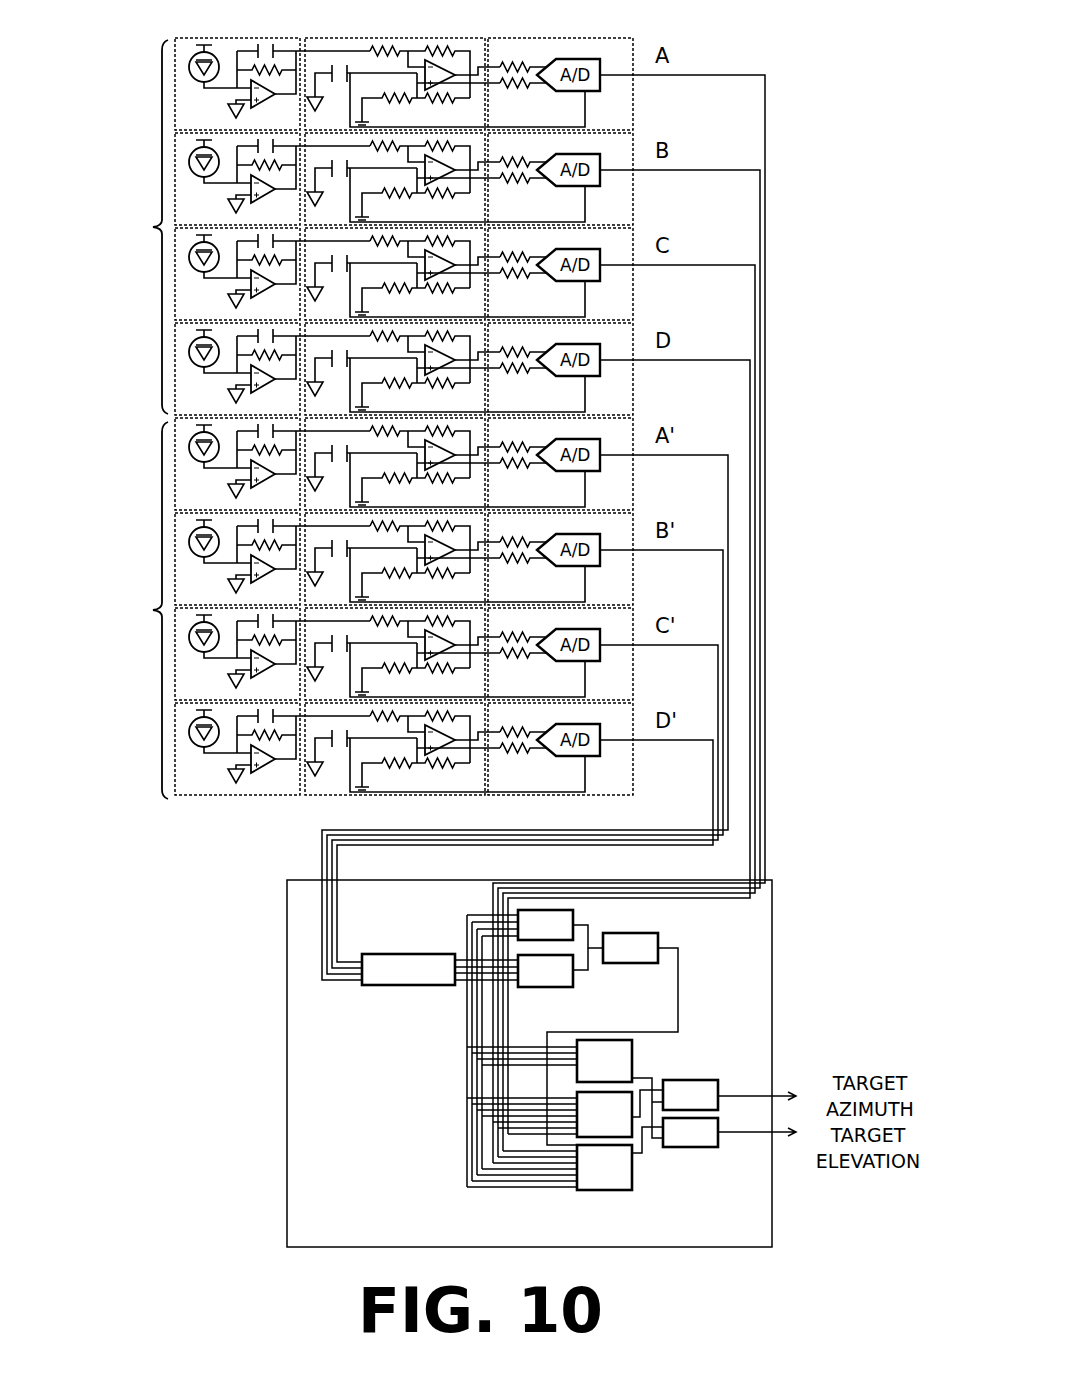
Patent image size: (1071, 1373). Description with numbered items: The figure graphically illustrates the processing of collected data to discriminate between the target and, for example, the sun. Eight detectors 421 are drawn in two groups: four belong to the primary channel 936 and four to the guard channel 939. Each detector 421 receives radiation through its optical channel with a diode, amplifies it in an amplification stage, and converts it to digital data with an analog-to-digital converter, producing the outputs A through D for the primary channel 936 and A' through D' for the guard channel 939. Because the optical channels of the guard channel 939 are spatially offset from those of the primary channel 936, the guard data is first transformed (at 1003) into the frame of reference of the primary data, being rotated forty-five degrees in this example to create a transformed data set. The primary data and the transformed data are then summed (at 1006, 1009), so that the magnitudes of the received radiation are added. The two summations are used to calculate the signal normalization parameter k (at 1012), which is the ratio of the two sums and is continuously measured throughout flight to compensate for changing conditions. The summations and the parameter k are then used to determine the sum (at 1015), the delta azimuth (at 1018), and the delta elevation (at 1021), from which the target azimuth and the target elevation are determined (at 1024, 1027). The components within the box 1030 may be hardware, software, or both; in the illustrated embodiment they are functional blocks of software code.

The detector 421 is at (662, 697).
The primary channel 936 is at (100, 227).
The guard channel 939 is at (100, 610).
The transformation 1003 is at (362, 988).
The summation 1006 is at (577, 919).
The summation 1009 is at (575, 982).
The normalization factor determination 1012 is at (660, 940).
The sum determination 1015 is at (632, 1053).
The delta azimuth determination 1018 is at (632, 1128).
The delta elevation determination 1021 is at (632, 1187).
The target azimuth determination 1024 is at (718, 1082).
The target elevation determination 1027 is at (718, 1147).
The box 1030 is at (286, 1061).